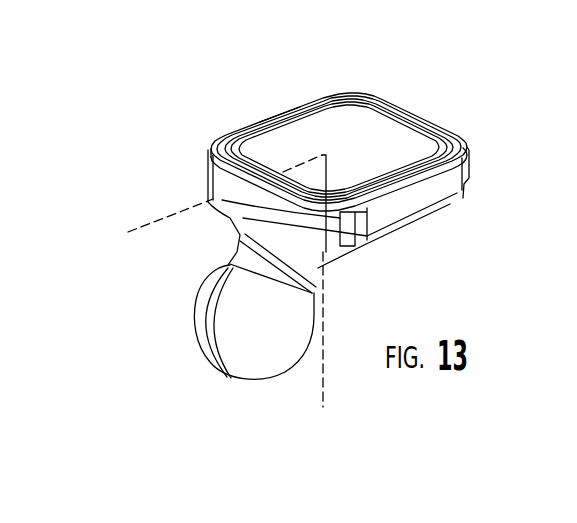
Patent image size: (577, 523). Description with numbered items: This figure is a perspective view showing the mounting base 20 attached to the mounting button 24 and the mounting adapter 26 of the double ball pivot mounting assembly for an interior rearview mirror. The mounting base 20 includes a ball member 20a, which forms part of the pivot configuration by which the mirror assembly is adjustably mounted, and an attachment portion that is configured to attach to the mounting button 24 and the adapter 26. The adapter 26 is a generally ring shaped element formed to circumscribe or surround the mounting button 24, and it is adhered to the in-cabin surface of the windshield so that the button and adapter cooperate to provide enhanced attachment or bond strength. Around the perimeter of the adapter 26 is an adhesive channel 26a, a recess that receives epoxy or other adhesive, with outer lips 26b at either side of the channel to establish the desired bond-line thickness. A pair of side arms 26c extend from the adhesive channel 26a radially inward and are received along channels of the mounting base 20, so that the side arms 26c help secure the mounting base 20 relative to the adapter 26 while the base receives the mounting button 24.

The mounting base 20 is at (200, 261).
The ball member 20a is at (256, 366).
The mounting button 24 is at (372, 143).
The mounting adapter 26 is at (468, 150).
The adhesive channel 26a is at (217, 146).
The outer lips 26b is at (277, 111).
The side arms 26c is at (420, 214).